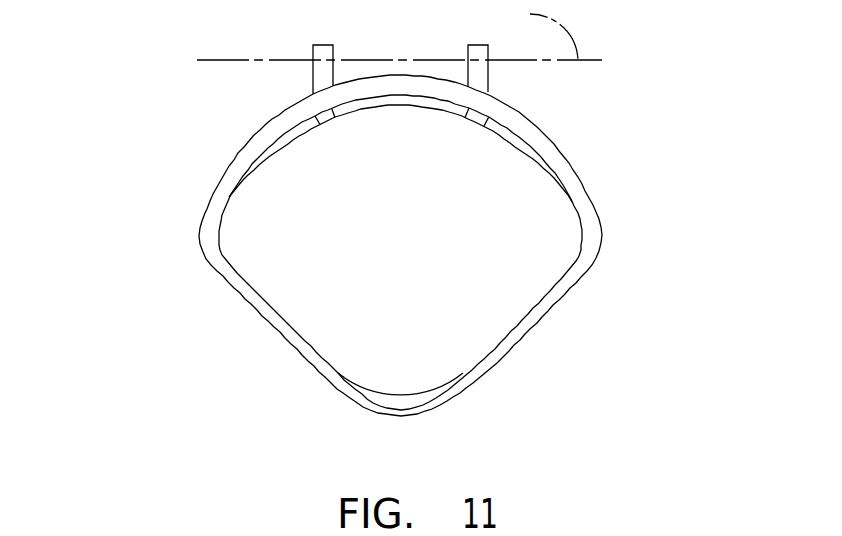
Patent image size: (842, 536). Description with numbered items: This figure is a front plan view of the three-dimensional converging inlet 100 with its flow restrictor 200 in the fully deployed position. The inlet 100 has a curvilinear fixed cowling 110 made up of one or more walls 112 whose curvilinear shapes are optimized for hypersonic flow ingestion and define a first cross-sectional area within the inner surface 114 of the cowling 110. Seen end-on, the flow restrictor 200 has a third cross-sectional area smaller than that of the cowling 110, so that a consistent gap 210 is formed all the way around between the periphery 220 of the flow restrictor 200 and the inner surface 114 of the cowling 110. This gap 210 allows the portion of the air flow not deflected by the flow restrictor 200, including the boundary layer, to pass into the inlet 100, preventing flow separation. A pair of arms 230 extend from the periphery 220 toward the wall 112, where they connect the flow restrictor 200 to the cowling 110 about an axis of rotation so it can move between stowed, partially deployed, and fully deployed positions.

The converging inlet 100 is at (166, 60).
The cowling 110 is at (591, 173).
The wall 112 is at (279, 114).
The inner surface 114 is at (399, 110).
The flow restrictor 200 is at (487, 317).
The gap 210 is at (270, 258).
The periphery 220 is at (581, 250).
The arms 230 is at (311, 130).